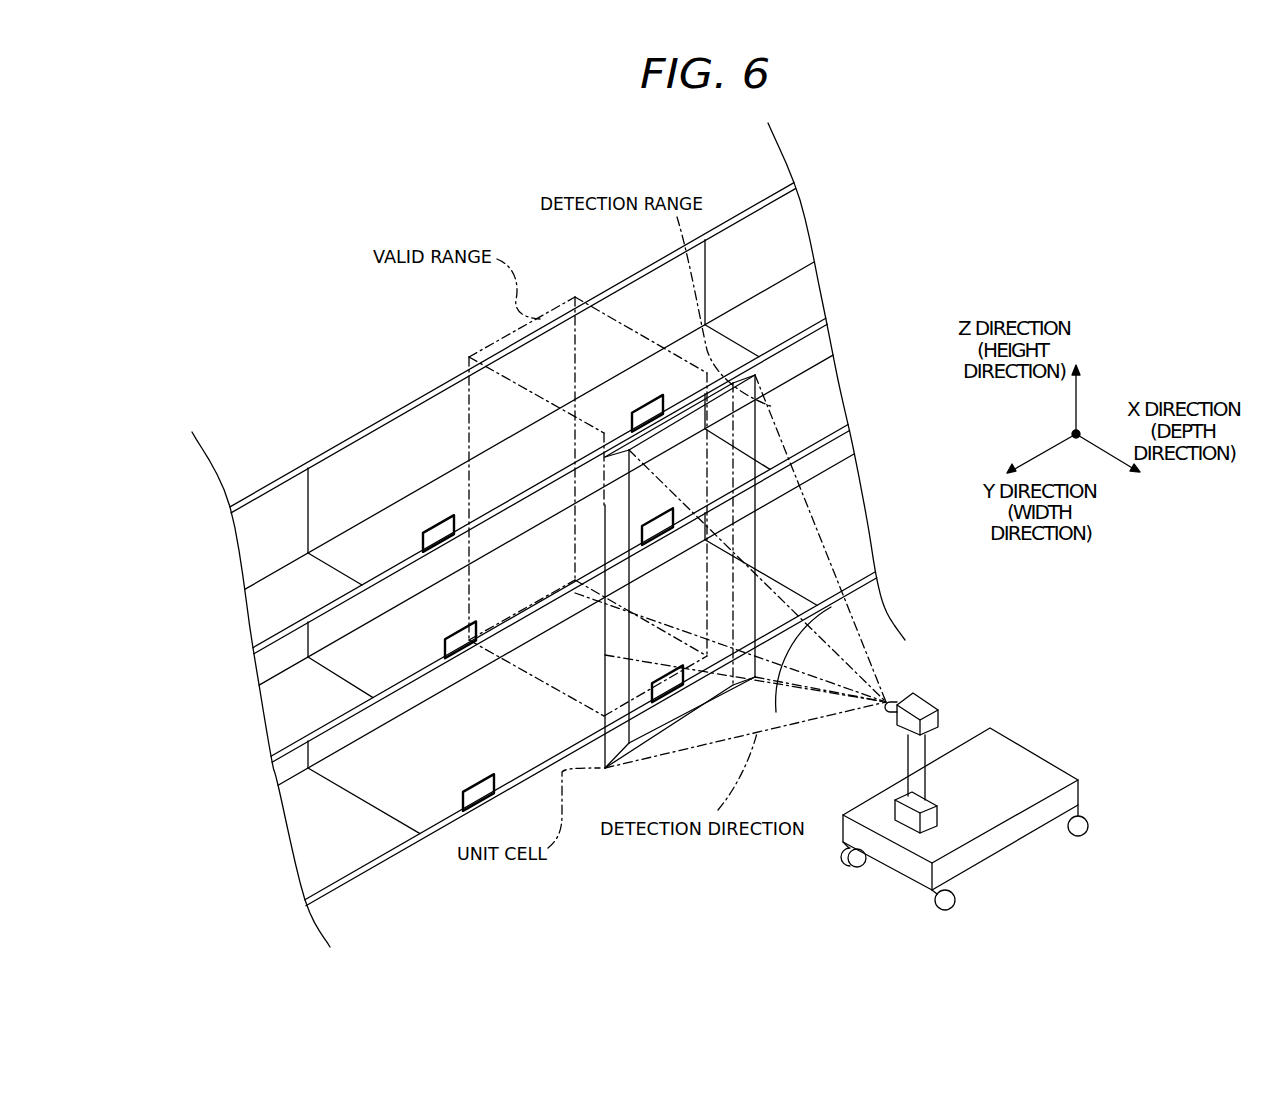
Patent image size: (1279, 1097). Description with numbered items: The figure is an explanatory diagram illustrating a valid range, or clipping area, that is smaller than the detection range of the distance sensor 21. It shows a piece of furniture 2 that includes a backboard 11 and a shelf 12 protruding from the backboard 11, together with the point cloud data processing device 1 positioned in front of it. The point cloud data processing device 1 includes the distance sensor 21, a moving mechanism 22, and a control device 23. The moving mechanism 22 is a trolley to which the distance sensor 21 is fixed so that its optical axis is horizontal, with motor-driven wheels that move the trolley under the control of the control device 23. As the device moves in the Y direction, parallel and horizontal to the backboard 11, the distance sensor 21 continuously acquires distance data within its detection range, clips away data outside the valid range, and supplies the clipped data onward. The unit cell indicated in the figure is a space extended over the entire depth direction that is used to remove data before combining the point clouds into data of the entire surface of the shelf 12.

The point cloud data processing device 1 is at (964, 788).
The furniture 2 is at (533, 535).
The backboard 11 is at (358, 452).
The shelf 12 is at (392, 792).
The distance sensor 21 is at (930, 817).
The moving mechanism 22 is at (940, 708).
The control device 23 is at (1018, 757).